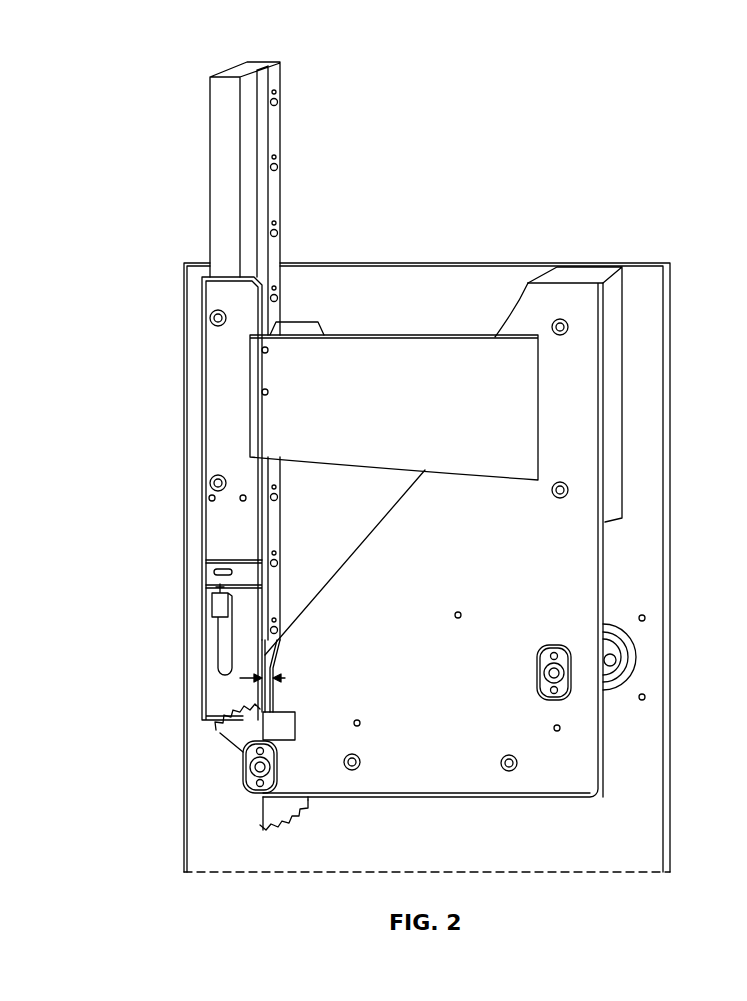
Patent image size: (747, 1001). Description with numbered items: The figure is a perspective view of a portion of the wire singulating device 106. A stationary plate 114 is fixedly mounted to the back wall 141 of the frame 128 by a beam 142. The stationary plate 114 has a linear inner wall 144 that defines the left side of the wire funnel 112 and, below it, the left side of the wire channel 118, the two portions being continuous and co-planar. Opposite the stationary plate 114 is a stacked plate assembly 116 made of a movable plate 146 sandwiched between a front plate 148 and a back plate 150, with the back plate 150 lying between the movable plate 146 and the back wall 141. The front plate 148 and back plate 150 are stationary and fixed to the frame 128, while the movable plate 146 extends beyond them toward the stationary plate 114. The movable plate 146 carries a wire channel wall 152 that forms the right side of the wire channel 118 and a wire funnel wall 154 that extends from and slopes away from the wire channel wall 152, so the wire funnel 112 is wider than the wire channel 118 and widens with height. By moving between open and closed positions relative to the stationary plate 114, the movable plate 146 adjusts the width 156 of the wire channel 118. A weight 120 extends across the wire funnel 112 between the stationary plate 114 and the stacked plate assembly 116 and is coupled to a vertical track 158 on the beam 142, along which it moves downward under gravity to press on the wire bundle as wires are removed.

The wire singulating device 106 is at (475, 149).
The wire funnel 112 is at (298, 581).
The stationary plate 114 is at (222, 535).
The stacked plate assembly 116 is at (573, 382).
The wire channel 118 is at (262, 660).
The weight 120 is at (458, 363).
The frame 128 is at (667, 295).
The back wall 141 is at (387, 283).
The beam 142 is at (223, 147).
The inner wall 144 is at (260, 655).
The movable plate 146 is at (268, 695).
The front plate 148 is at (577, 537).
The back plate 150 is at (602, 480).
The wire channel wall 152 is at (275, 703).
The wire funnel wall 154 is at (272, 665).
The width 156 is at (240, 683).
The track 158 is at (277, 312).